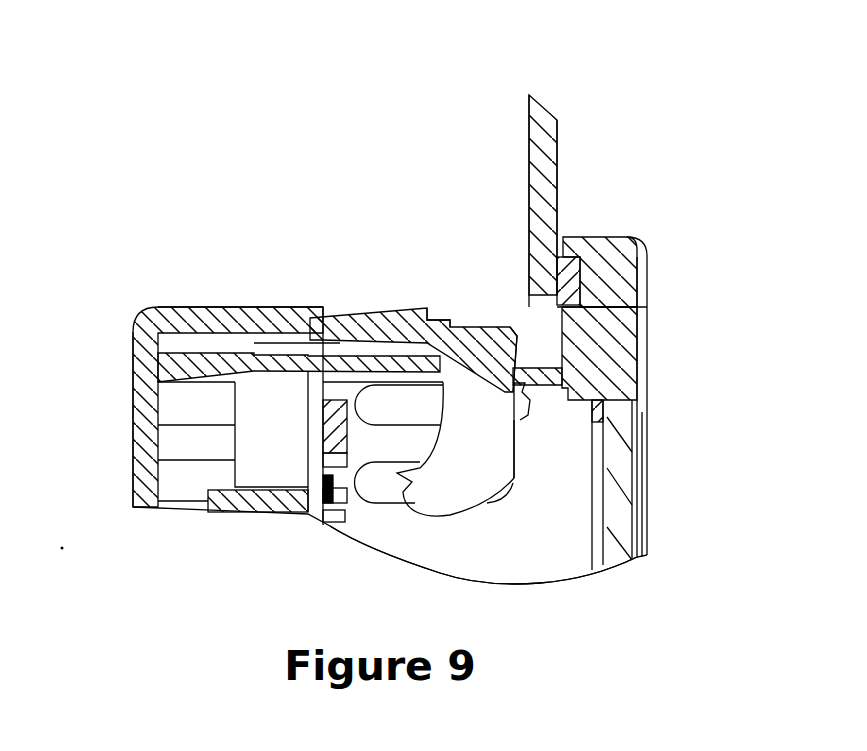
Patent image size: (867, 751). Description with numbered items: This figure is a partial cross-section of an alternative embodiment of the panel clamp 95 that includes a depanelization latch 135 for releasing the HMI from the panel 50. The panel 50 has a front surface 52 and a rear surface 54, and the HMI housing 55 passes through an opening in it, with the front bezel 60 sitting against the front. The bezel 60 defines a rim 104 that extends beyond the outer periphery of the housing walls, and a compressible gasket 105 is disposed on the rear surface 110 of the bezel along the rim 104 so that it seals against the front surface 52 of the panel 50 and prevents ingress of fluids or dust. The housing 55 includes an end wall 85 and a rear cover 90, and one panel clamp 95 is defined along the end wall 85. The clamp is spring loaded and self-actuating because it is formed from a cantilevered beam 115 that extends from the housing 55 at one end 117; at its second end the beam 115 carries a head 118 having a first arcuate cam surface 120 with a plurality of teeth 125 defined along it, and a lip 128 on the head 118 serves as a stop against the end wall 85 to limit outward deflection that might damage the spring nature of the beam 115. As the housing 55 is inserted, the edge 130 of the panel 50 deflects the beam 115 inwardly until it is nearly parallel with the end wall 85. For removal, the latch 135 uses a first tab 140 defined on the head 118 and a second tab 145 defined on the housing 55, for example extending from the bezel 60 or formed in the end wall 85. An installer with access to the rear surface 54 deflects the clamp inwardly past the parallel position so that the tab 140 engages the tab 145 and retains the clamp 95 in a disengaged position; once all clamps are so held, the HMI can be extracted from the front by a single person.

The panel 50 is at (547, 122).
The front surface 52 is at (557, 122).
The rear surface 54 is at (528, 125).
The housing 55 is at (133, 402).
The front bezel 60 is at (632, 378).
The end wall 85 is at (302, 346).
The rear cover 90 is at (133, 380).
The panel clamp 95 is at (372, 287).
The rim 104 is at (600, 235).
The compressible gasket 105 is at (572, 275).
The rear surface 110 is at (530, 232).
The cantilevered beam 115 is at (226, 307).
The end 117 is at (146, 320).
The head 118 is at (450, 470).
The first arcuate cam surface 120 is at (517, 332).
The teeth 125 is at (637, 403).
The lip 128 is at (397, 480).
The edge 130 is at (640, 308).
The depanelization latch 135 is at (521, 433).
The first tab 140 is at (523, 409).
The second tab 145 is at (528, 390).